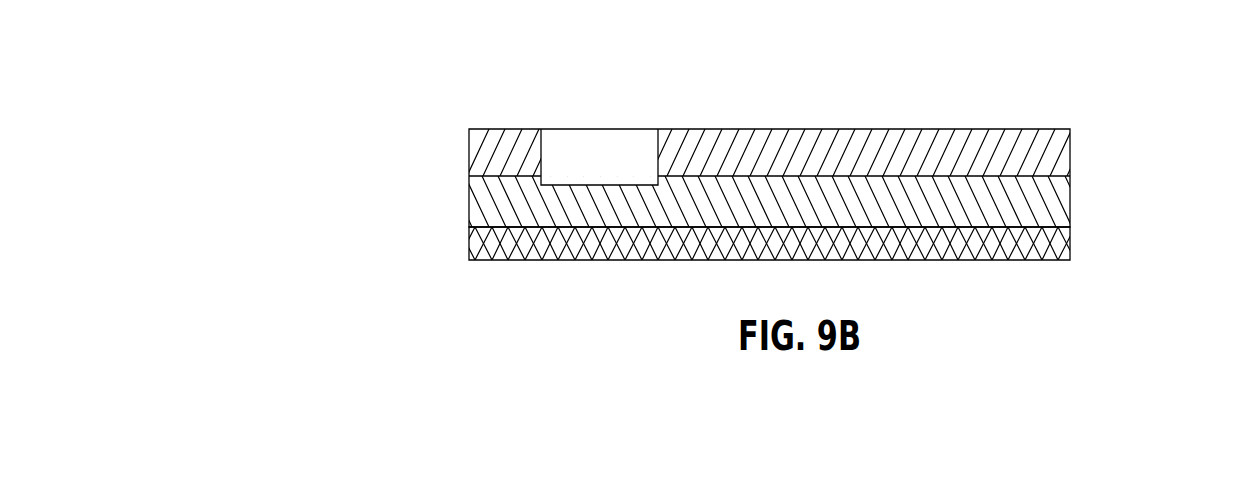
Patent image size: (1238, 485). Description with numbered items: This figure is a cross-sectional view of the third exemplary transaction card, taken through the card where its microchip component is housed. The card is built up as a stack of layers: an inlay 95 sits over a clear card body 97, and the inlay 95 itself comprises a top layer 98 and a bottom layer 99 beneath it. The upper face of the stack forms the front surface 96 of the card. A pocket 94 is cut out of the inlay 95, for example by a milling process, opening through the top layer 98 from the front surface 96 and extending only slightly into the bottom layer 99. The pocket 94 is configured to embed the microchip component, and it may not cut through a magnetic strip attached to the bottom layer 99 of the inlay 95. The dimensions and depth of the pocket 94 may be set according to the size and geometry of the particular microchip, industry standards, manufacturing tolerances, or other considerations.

The pocket 94 is at (591, 138).
The inlay 95 is at (830, 155).
The front surface 96 is at (797, 155).
The clear card body 97 is at (1064, 243).
The top layer 98 is at (1057, 160).
The bottom layer 99 is at (797, 194).